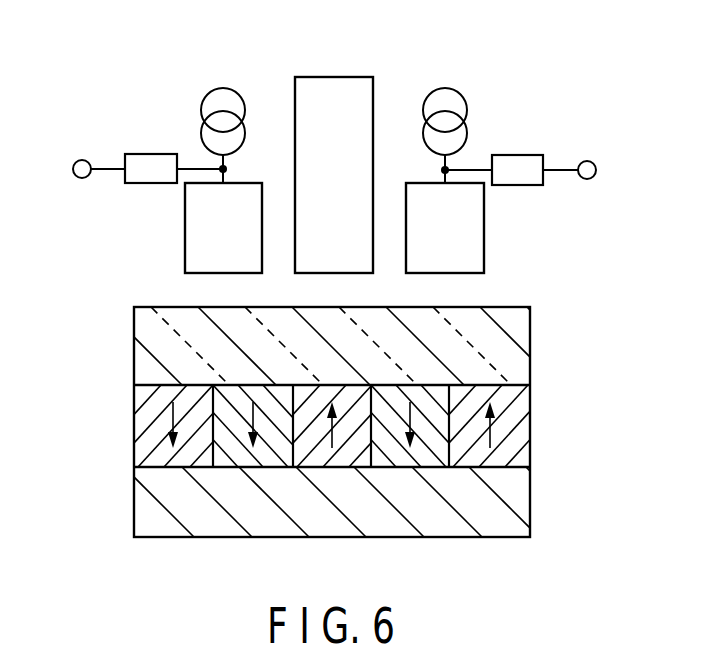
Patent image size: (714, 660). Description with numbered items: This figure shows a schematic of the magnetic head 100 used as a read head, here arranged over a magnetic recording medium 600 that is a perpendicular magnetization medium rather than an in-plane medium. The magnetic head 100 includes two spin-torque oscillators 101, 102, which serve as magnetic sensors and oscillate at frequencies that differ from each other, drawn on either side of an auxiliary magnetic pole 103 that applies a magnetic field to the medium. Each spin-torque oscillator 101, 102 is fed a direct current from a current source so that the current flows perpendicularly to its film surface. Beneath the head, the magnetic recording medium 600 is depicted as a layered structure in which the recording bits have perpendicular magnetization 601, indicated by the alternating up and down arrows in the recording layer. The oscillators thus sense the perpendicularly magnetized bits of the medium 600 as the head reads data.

The magnetic head 100 is at (124, 57).
The spin-torque oscillator 101 is at (484, 265).
The spin-torque oscillator 102 is at (185, 270).
The auxiliary magnetic pole 103 is at (350, 77).
The magnetic recording medium (perpendicular magnetization medium) 600 is at (530, 343).
The perpendicular magnetization 601 is at (522, 428).